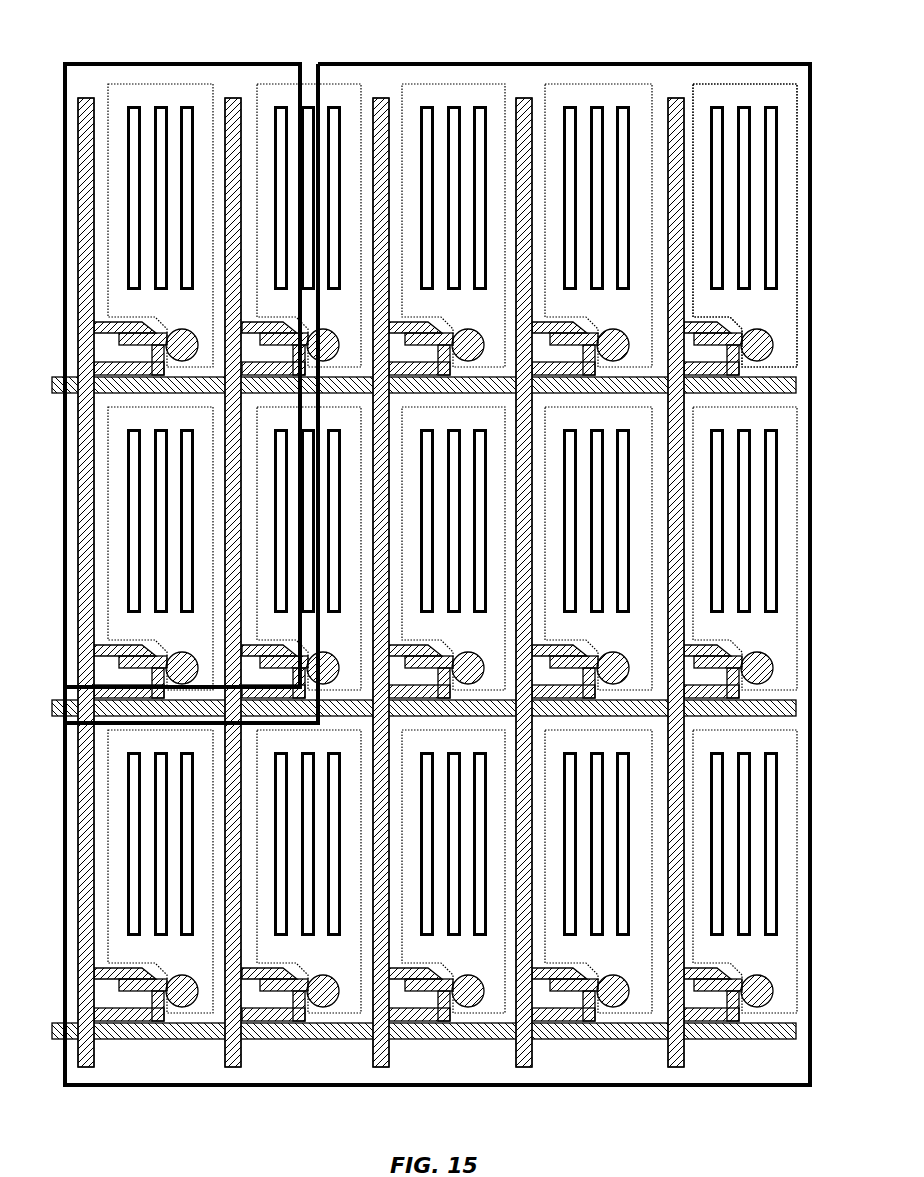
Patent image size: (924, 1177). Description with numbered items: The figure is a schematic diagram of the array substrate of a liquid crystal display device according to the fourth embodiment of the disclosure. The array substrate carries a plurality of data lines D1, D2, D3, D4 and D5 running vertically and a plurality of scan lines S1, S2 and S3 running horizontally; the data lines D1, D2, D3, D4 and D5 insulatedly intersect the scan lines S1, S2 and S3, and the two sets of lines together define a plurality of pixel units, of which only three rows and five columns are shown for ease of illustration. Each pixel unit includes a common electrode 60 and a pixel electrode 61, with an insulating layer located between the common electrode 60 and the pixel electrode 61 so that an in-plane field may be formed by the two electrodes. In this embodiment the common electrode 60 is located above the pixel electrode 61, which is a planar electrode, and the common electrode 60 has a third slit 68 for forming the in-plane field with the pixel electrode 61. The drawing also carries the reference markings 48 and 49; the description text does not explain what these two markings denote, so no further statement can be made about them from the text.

The data line D1 is at (84, 97).
The data line D2 is at (232, 98).
The data line D3 is at (380, 98).
The data line D4 is at (525, 98).
The data line D5 is at (675, 98).
The scan line S1 is at (52, 382).
The scan line S2 is at (52, 706).
The scan line S3 is at (52, 1030).
The slit of pixel electrode 48 is at (186, 118).
The pixel unit region 49 is at (306, 66).
The third slit 68 is at (743, 108).
The pixel electrode 61 is at (798, 122).
The common electrode 60 is at (812, 160).